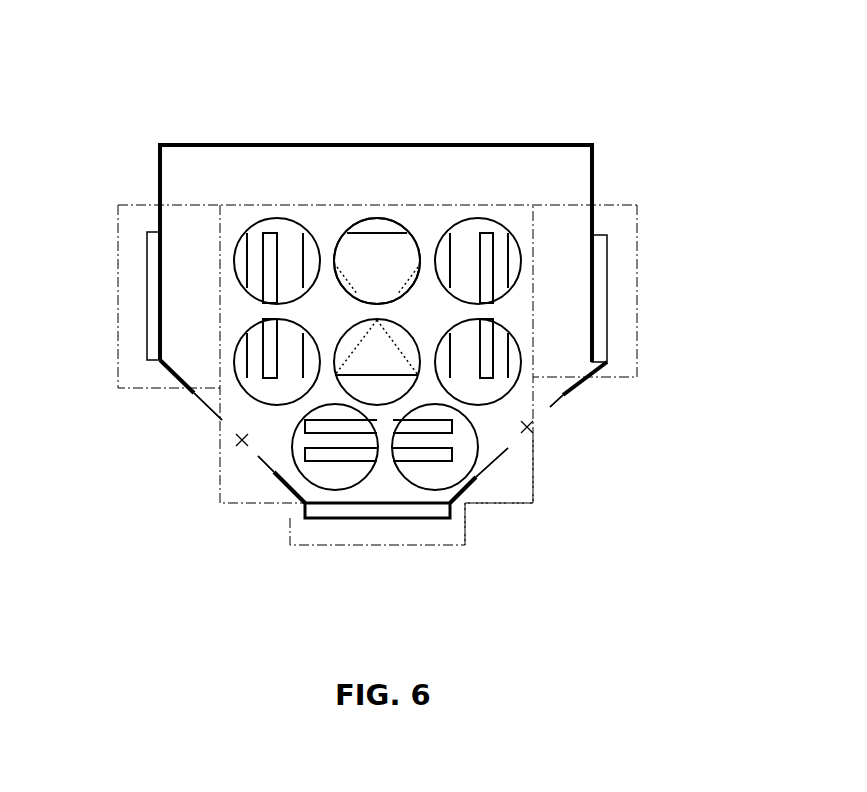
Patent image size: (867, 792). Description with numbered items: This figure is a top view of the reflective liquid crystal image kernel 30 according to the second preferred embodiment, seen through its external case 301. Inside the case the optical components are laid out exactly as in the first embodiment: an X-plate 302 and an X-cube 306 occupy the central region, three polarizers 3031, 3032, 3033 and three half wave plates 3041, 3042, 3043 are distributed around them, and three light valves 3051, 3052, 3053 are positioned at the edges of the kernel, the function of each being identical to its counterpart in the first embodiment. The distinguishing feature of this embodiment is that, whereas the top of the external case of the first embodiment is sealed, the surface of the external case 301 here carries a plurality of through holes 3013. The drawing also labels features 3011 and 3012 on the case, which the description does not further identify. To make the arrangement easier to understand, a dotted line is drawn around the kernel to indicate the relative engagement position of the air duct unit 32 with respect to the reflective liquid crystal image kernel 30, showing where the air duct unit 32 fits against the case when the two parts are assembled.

The reflective liquid crystal image kernel 30 is at (606, 136).
The external case 301 is at (290, 145).
The X-plate 302 is at (344, 268).
The X-cube 306 is at (374, 233).
The polarizer 3031 is at (478, 253).
The polarizer 3032 is at (305, 431).
The polarizer 3033 is at (272, 258).
The half wave plate 3041 is at (508, 243).
The half wave plate 3042 is at (310, 462).
The half wave plate 3043 is at (247, 258).
The light valve 3051 is at (610, 266).
The light valve 3052 is at (387, 520).
The light valve 3053 is at (147, 315).
The side wall outline 3011 is at (533, 437).
The left chamfered edge 3012 is at (235, 445).
The through holes 3013 is at (508, 395).
The air duct unit 32 is at (535, 492).